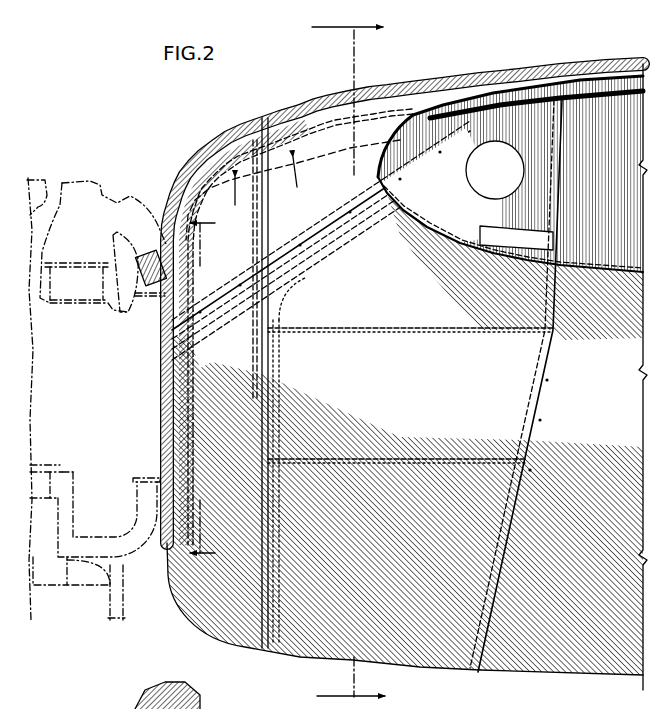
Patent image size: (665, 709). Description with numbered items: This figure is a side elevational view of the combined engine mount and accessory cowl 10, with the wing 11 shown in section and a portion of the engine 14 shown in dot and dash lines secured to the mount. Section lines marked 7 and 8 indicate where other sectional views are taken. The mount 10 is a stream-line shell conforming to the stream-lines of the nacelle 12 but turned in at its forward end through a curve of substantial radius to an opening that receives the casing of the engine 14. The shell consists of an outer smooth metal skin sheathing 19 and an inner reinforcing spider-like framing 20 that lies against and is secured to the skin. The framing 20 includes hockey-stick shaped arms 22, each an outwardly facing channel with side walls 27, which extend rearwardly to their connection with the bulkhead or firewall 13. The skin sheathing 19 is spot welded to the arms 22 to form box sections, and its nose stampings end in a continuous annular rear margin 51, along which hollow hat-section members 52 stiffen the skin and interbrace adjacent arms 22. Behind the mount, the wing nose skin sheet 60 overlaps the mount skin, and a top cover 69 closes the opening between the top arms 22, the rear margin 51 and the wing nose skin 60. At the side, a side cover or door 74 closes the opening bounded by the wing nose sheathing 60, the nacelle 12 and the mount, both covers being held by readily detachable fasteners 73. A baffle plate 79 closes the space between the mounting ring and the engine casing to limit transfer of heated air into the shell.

The section line 7- 7 is at (348, 359).
The section line 8- 8 is at (202, 389).
The combined engine mount and accessory cowl 10 is at (228, 128).
The wing 11 is at (487, 74).
The nacelle 12 is at (582, 676).
The bulkhead or firewall 13 is at (543, 408).
The engine 14 is at (88, 354).
The outer smooth metal skin sheathing 19 is at (196, 150).
The inner reinforcing spider-like framing 20 is at (160, 420).
The rearwardly extending arms 22 is at (348, 211).
The side walls 27 is at (186, 695).
The rear margin 51 is at (273, 381).
The hat-section members 52 is at (258, 242).
The wing nose skin sheet 60 is at (505, 78).
The top cover 69 is at (420, 84).
The readily detachable fasteners 73 is at (318, 253).
The side cover or door 74 is at (495, 423).
The baffle plate 79 is at (160, 245).